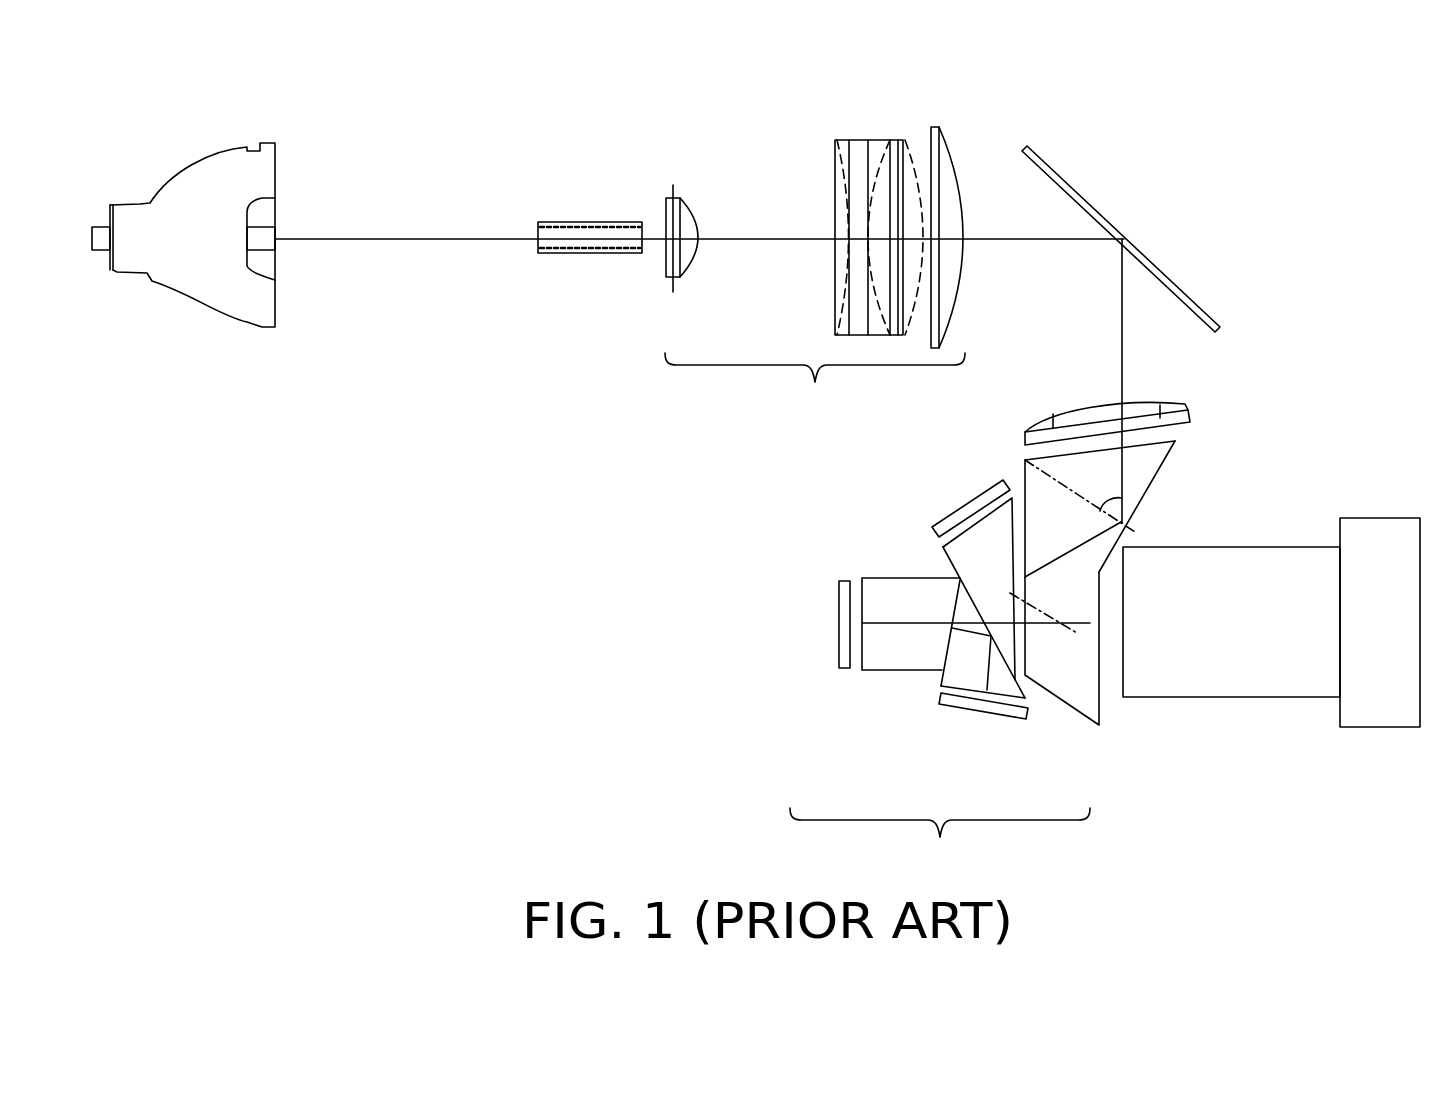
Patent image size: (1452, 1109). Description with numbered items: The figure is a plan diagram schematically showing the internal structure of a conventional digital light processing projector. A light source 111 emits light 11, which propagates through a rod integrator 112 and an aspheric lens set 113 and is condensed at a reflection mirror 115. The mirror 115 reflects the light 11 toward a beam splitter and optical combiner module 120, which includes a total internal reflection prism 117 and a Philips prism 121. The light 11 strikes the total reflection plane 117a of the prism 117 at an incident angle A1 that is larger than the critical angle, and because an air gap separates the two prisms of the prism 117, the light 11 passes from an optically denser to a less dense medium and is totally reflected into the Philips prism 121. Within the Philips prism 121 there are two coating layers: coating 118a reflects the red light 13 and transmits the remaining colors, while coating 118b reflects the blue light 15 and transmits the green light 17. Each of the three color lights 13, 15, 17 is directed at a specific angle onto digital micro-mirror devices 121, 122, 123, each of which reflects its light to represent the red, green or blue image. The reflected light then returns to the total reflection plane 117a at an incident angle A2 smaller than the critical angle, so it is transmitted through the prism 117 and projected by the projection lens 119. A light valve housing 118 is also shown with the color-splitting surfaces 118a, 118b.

The light 11 is at (420, 238).
The red light 13 is at (993, 537).
The blue light 15 is at (978, 670).
The green light 17 is at (933, 622).
The light source 111 is at (195, 160).
The rod integrator 112 is at (583, 222).
The aspheric lens set 113 is at (815, 275).
The reflection mirror 115 is at (1170, 282).
The total internal reflection (TIR) prism 117 is at (1162, 467).
The total reflection plane 117a is at (1150, 486).
The light valve 118 is at (892, 672).
The coating 118a is at (972, 592).
The coating 118b is at (945, 660).
The projection lens 119 is at (1243, 697).
The beam splitter module 120 is at (940, 842).
The Philips prism 121 is at (950, 512).
The digital micro-mirror device (DMD) 122 is at (838, 649).
The digital micro-mirror device (DMD) 123 is at (978, 713).
The incident angle A1 is at (1113, 496).
The incident angle A2 is at (1042, 617).